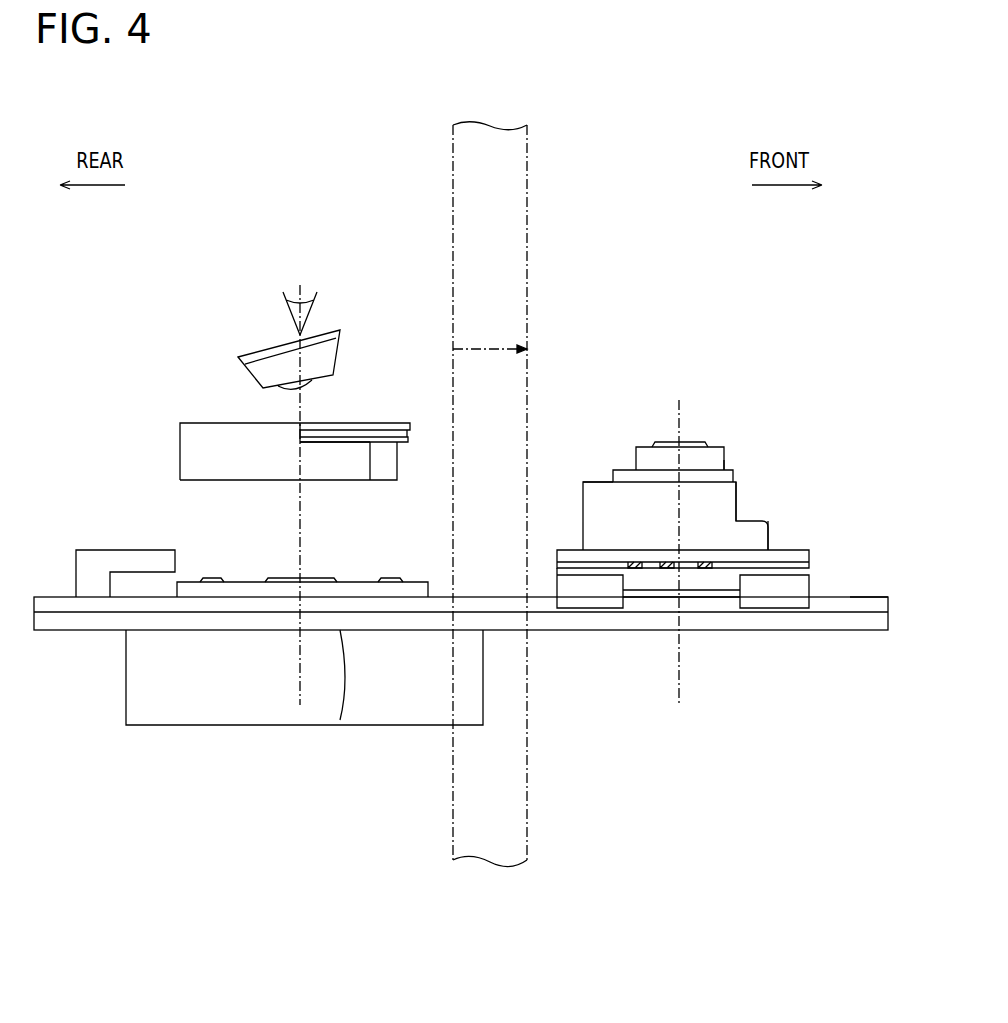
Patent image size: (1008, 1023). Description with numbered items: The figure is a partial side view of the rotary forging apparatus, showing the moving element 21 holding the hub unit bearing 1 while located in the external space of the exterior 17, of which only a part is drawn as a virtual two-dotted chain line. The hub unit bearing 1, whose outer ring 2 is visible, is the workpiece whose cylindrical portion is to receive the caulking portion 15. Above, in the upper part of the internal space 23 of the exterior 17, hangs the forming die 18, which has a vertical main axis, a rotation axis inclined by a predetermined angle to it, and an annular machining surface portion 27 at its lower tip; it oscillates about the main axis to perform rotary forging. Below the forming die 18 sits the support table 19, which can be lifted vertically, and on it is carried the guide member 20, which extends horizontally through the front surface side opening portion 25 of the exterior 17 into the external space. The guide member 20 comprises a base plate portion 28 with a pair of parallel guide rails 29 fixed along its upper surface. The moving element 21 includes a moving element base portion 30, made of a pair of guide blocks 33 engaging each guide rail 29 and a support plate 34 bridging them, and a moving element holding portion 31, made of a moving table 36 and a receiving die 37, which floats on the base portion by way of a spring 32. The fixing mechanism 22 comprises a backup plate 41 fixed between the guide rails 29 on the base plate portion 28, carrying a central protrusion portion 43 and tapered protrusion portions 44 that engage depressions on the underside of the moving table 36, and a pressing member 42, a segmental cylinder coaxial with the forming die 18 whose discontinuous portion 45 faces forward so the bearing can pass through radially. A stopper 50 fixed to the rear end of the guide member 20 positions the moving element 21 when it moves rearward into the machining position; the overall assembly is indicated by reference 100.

The hub unit bearing 1 is at (719, 436).
The outer ring 2 is at (645, 456).
The caulking portion 15 is at (668, 440).
The exterior 17 is at (515, 197).
The forming die 18 is at (340, 358).
The support table 19 is at (200, 710).
The guide member 20 is at (340, 632).
The moving element 21 is at (722, 468).
The fixing mechanism 22 is at (177, 413).
The internal space 23 is at (394, 247).
The front surface side opening portion 25 is at (529, 356).
The annular machining surface portion 27 is at (332, 372).
The base plate portion 28 is at (855, 620).
The guide rails 29 is at (872, 597).
The moving element base portion 30 is at (718, 612).
The moving element holding portion 31 is at (597, 470).
The spring 32 is at (722, 600).
The guide blocks 33 is at (590, 610).
The support plate 34 is at (803, 555).
The moving table 36 is at (780, 548).
The receiving die 37 is at (716, 535).
The backup plate 41 is at (192, 584).
The pressing member 42 is at (238, 445).
The central protrusion portion 43 is at (282, 577).
The tapered protrusion portion 44 is at (212, 577).
The discontinuous portion 45 is at (392, 462).
The stopper 50 is at (92, 562).
The sensor unit 100 is at (723, 768).